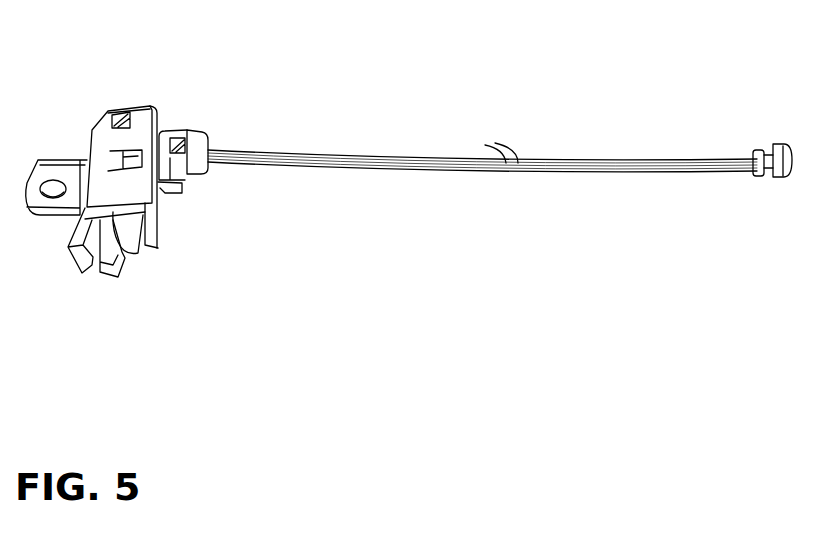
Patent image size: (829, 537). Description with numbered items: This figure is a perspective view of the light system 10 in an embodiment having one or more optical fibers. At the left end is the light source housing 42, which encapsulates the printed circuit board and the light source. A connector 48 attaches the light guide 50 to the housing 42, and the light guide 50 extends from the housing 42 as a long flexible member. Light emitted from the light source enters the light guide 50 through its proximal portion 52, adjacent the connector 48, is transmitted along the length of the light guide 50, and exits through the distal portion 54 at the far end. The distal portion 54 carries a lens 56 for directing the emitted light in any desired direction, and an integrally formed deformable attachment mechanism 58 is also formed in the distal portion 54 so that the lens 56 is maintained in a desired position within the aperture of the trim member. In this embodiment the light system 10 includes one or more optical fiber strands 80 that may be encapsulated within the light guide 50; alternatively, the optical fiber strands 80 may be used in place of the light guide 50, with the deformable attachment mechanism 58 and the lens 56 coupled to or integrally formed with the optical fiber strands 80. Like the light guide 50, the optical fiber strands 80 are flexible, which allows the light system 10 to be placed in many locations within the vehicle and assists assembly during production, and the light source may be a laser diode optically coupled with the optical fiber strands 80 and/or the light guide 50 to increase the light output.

The light system 10 is at (358, 92).
The light source housing 42 is at (95, 121).
The connector 48 is at (200, 130).
The light guide 50 is at (392, 170).
The proximal portion 52 is at (215, 136).
The distal portion 54 is at (787, 141).
The lens 56 is at (792, 177).
The integrally formed deformable attachment mechanism 58 is at (760, 150).
The optical fiber strands 80 is at (493, 163).